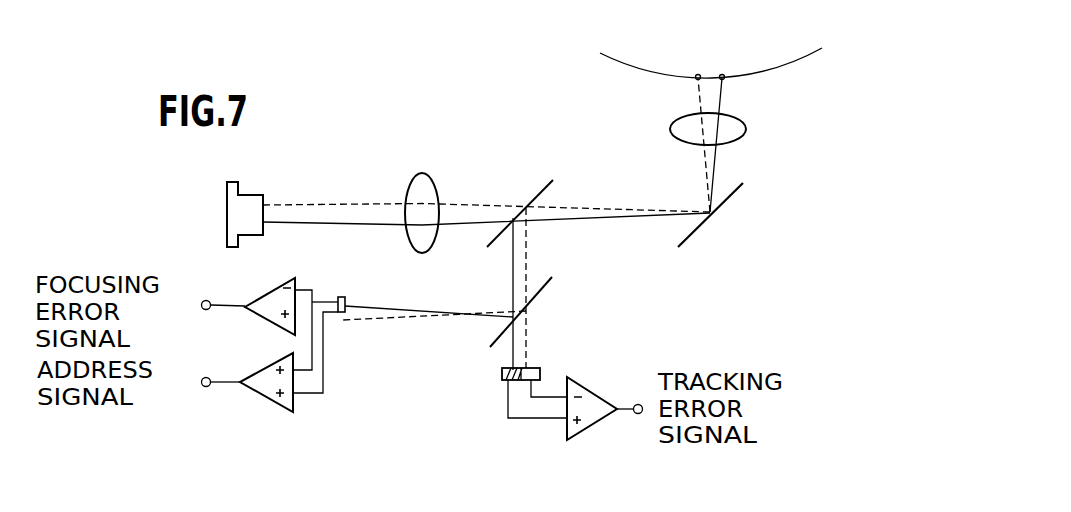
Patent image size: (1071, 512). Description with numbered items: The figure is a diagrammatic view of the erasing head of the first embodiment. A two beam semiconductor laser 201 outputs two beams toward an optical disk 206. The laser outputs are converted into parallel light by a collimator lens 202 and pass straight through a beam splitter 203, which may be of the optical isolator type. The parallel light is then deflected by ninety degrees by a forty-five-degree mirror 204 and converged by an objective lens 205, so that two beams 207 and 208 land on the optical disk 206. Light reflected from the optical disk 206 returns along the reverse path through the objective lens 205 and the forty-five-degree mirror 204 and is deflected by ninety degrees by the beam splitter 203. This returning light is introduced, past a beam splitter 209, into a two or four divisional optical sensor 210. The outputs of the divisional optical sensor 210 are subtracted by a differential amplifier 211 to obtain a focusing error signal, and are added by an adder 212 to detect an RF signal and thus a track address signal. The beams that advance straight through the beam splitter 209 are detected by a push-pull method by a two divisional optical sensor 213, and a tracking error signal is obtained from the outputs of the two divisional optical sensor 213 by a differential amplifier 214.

The two beam semiconductor laser 201 is at (283, 172).
The collimator lens 202 is at (460, 143).
The beam splitter 203 is at (568, 148).
The 45-degree mirror 204 is at (730, 202).
The objective lens 205 is at (746, 126).
The optical disk 206 is at (758, 75).
The beam 207 is at (699, 73).
The beam 208 is at (750, 52).
The beam splitter 209 is at (550, 285).
The divisional optical sensor 210 is at (346, 263).
The differential amplifier 211 is at (270, 292).
The adder 212 is at (270, 402).
The two divisional optical sensor 213 is at (541, 367).
The differential amplifier 214 is at (605, 421).